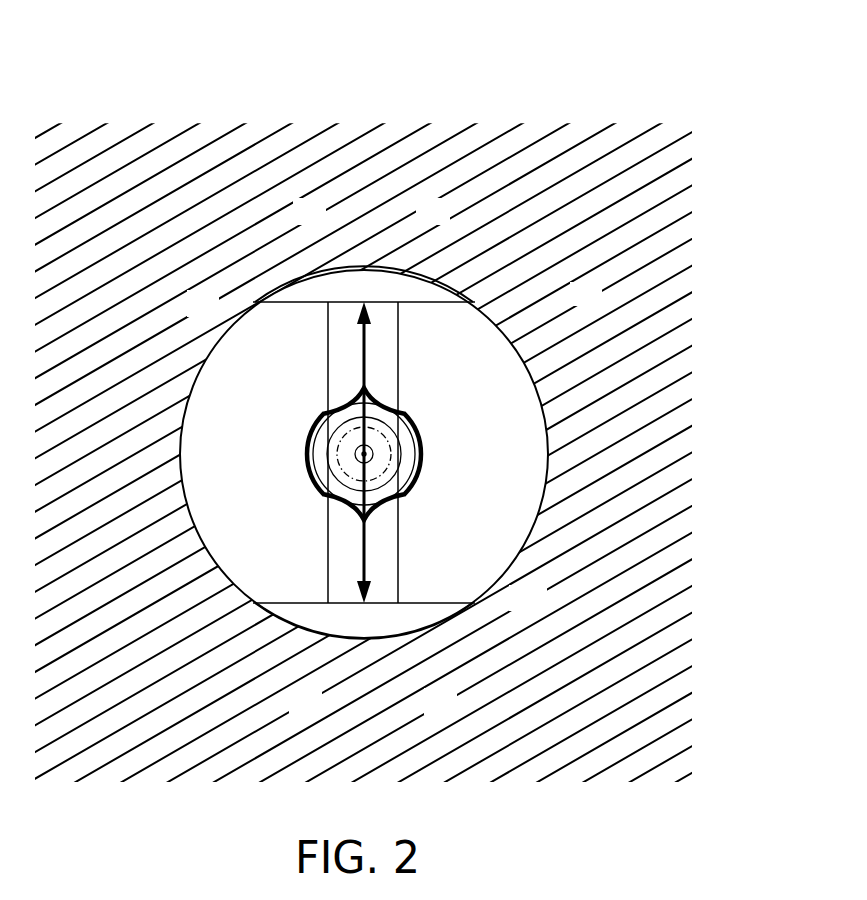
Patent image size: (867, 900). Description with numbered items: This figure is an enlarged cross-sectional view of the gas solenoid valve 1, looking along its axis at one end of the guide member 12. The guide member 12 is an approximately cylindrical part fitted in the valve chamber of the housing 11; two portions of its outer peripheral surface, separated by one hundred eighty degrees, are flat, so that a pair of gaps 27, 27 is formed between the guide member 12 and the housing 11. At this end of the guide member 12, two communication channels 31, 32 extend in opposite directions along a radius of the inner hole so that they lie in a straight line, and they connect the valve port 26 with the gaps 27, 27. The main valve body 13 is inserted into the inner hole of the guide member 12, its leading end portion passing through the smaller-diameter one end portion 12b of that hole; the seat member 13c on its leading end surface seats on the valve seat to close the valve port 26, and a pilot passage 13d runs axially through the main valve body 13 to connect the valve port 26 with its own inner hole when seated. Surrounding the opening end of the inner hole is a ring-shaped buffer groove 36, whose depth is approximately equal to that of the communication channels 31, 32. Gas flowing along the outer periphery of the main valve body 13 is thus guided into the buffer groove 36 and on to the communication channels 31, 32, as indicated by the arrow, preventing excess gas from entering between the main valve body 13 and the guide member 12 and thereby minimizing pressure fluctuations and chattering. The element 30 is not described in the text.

The gas solenoid valve 1 is at (433, 450).
The housing 11 is at (676, 222).
The guide member 12 is at (497, 348).
The one end portion of the inner hole 12b is at (325, 406).
The main valve body 13 is at (409, 420).
The seat member 13c is at (396, 402).
The pilot passage 13d is at (360, 463).
The valve port 26 is at (413, 472).
The gap 27 is at (346, 272).
The guide wall 30 is at (382, 301).
The communication channel 31 is at (330, 354).
The communication channel 32 is at (388, 556).
The buffer groove 36 is at (308, 428).